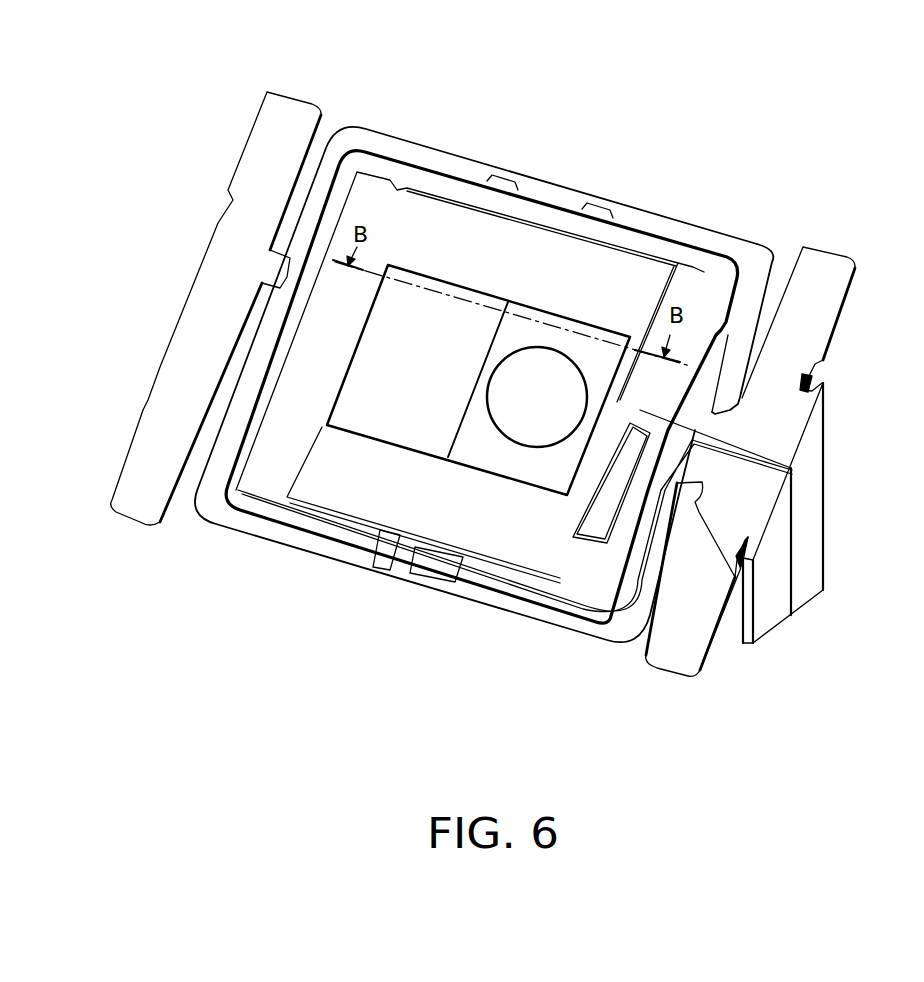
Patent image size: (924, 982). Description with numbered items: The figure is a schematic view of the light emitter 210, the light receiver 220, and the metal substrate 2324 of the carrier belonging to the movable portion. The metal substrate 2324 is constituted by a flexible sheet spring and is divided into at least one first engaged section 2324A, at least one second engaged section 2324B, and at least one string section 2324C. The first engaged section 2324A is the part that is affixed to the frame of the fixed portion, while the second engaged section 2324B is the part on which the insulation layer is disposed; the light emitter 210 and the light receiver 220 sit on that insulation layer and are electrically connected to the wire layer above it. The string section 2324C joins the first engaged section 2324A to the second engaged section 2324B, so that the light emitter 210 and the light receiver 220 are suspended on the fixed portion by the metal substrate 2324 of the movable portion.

The metal substrate 2324 is at (286, 556).
The first engaged section 2324A is at (292, 115).
The second engaged section 2324B is at (705, 292).
The string section 2324C is at (438, 162).
The light emitter 210 is at (380, 412).
The light receiver 220 is at (540, 458).